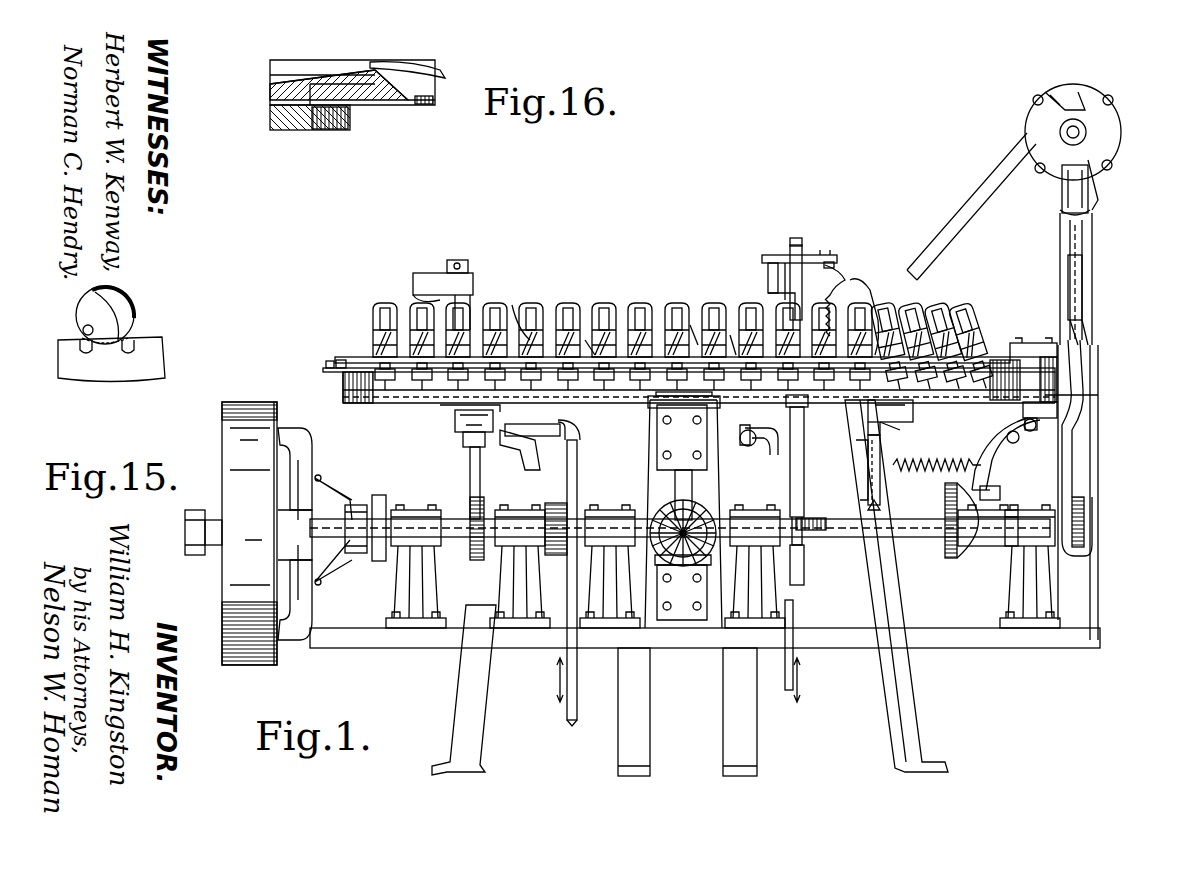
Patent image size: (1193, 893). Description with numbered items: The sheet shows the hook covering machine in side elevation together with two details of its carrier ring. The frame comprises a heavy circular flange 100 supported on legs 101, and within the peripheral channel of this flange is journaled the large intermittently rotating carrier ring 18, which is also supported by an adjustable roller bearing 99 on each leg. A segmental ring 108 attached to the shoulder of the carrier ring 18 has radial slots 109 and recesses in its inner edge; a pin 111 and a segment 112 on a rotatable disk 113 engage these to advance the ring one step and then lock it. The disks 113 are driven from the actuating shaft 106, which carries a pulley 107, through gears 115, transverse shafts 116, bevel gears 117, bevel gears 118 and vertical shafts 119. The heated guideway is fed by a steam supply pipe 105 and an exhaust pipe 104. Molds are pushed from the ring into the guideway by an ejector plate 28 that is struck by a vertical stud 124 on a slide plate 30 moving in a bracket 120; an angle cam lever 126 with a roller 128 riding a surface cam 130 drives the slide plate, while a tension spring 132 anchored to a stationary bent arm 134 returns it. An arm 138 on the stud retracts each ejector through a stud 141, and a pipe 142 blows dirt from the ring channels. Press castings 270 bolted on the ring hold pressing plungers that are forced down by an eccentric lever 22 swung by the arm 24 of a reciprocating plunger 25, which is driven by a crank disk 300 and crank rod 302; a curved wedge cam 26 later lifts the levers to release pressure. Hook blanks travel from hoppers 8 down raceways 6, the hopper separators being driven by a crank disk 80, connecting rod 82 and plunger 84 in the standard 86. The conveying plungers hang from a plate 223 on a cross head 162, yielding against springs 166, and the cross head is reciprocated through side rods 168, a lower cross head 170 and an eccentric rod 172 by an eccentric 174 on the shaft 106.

In FIG. 1, the raceways 6 is at (935, 228).
In FIG. 1, the hoppers 8 is at (1100, 125).
In FIG. 16, the carrier ring 18 is at (270, 90).
In FIG. 1, the carrier ring 18 is at (345, 392).
In FIG. 1, the eccentric lever 22 is at (515, 310).
In FIG. 1, the arm 24 is at (438, 273).
In FIG. 1, the plunger 25 is at (470, 398).
In FIG. 1, the curved wedge cam 26 is at (738, 330).
In FIG. 1, the ejector plate 28 is at (330, 361).
In FIG. 1, the slide plate 30 is at (1057, 410).
In FIG. 1, the crank disk 80 is at (1084, 522).
In FIG. 1, the connecting rod 82 is at (1084, 400).
In FIG. 1, the plunger 84 is at (1082, 275).
In FIG. 1, the standard 86 is at (1085, 580).
In FIG. 1, the adjustable roller bearing 99 is at (905, 425).
In FIG. 16, the circular flange 100 is at (435, 105).
In FIG. 1, the legs 101 is at (470, 732).
In FIG. 1, the exhaust pipe 104 is at (793, 662).
In FIG. 1, the steam supply pipe 105 is at (567, 478).
In FIG. 1, the shaft 106 is at (448, 518).
In FIG. 1, the pulley 107 is at (278, 658).
In FIG. 16, the ring 108 is at (295, 128).
In FIG. 15, the ring 108 is at (143, 378).
In FIG. 1, the ring 108 is at (372, 400).
In FIG. 16, the radial slots 109 is at (336, 120).
In FIG. 15, the radial slots 109 is at (126, 355).
In FIG. 15, the pin 111 is at (84, 328).
In FIG. 1, the pin 111 is at (640, 305).
In FIG. 15, the segment 112 is at (128, 306).
In FIG. 1, the segment 112 is at (697, 310).
In FIG. 15, the rotatable disk 113 is at (92, 305).
In FIG. 1, the rotatable disk 113 is at (648, 404).
In FIG. 1, the gears 115 is at (556, 556).
In FIG. 1, the transverse shafts 116 is at (580, 520).
In FIG. 1, the bevel gears 117 is at (712, 515).
In FIG. 1, the bevel gears 118 is at (685, 635).
In FIG. 1, the vertical shafts 119 is at (692, 488).
In FIG. 1, the bracket 120 is at (1037, 425).
In FIG. 1, the vertical stud 124 is at (1052, 372).
In FIG. 1, the angle cam lever 126 is at (1000, 458).
In FIG. 1, the roller 128 is at (1000, 492).
In FIG. 1, the surface cam 130 is at (992, 548).
In FIG. 1, the tension spring 132 is at (935, 470).
In FIG. 1, the bent arm 134 is at (882, 440).
In FIG. 1, the arm 138 is at (1032, 343).
In FIG. 1, the stud 141 is at (342, 360).
In FIG. 16, the pipe 142 is at (440, 68).
In FIG. 1, the cross head 162 is at (800, 240).
In FIG. 1, the springs 166 is at (862, 285).
In FIG. 1, the side rods 168 is at (768, 255).
In FIG. 1, the lower cross head 170 is at (778, 448).
In FIG. 1, the eccentric rod 172 is at (804, 478).
In FIG. 1, the eccentric 174 is at (800, 535).
In FIG. 1, the plate 223 is at (836, 262).
In FIG. 1, the press castings 270 is at (560, 305).
In FIG. 1, the crank disk 300 is at (474, 560).
In FIG. 1, the crank rod 302 is at (468, 470).